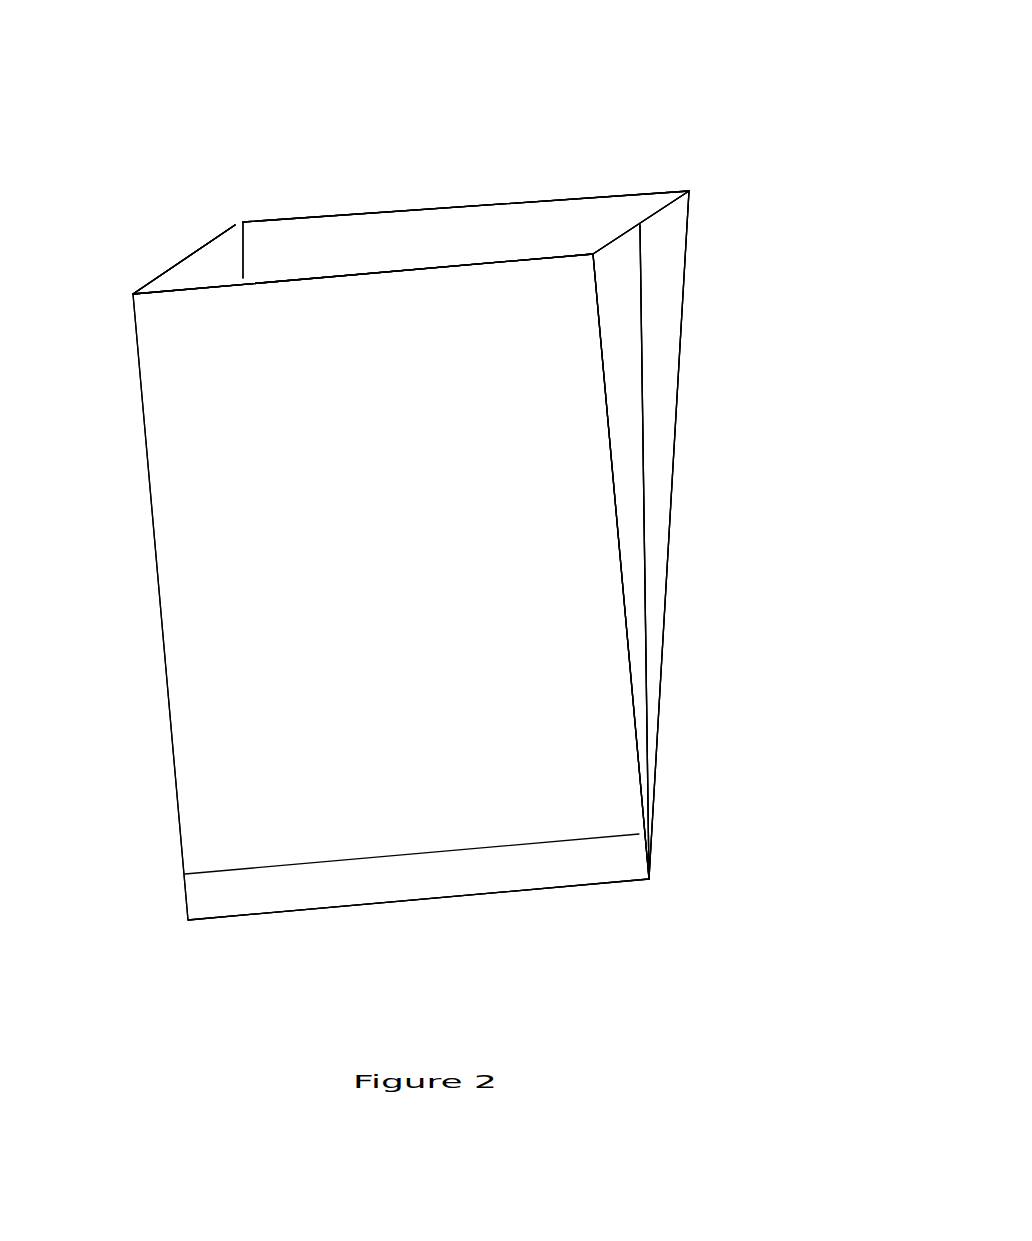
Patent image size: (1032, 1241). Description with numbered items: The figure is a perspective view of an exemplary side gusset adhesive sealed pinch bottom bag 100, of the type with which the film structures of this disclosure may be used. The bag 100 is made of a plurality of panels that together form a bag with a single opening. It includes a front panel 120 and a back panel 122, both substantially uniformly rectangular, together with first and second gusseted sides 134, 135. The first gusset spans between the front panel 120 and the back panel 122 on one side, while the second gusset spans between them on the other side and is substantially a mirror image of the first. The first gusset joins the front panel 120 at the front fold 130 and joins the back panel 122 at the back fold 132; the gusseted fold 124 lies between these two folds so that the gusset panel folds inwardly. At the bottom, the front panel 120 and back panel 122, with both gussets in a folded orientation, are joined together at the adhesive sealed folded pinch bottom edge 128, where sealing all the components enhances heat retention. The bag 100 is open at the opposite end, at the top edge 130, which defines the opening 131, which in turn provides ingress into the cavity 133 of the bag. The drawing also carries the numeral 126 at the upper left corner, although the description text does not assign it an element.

The bag 100 is at (342, 107).
The front panel 120 is at (592, 672).
The back panel 122 is at (541, 203).
The gusseted fold 124 is at (640, 307).
The top corner fold 126 is at (193, 258).
The adhesive sealed folded pinch bottom edge 128 is at (591, 886).
The front fold 130 is at (542, 253).
The opening 131 is at (375, 238).
The cavity 133 is at (411, 242).
The back fold 132 is at (690, 258).
The first gusseted side 134 is at (623, 422).
The second gusseted side 135 is at (213, 238).